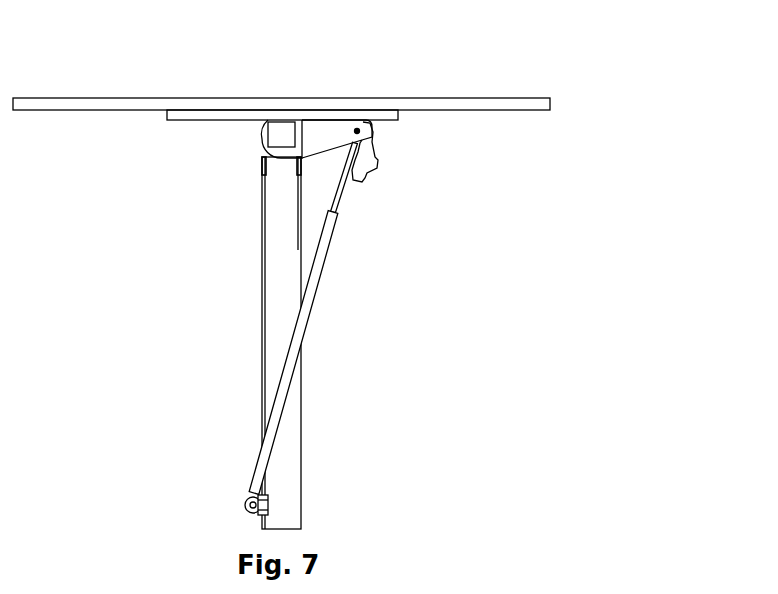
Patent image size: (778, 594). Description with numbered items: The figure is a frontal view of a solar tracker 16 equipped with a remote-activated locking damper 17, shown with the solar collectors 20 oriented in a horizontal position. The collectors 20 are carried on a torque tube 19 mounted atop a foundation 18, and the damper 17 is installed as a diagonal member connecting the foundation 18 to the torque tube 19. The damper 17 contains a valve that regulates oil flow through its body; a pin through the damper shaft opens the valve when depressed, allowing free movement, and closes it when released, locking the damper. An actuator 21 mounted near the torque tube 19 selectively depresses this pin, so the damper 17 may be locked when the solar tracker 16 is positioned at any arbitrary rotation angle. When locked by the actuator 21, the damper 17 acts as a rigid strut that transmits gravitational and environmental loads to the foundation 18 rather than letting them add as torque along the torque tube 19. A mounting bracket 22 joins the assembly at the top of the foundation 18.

The solar tracker 16 is at (126, 413).
The remote-activated locking damper 17 is at (318, 284).
The foundation 18 is at (262, 272).
The torque tube 19 is at (263, 142).
The solar collectors 20 is at (122, 98).
The actuator 21 is at (378, 165).
The hinge bracket 22 is at (322, 137).